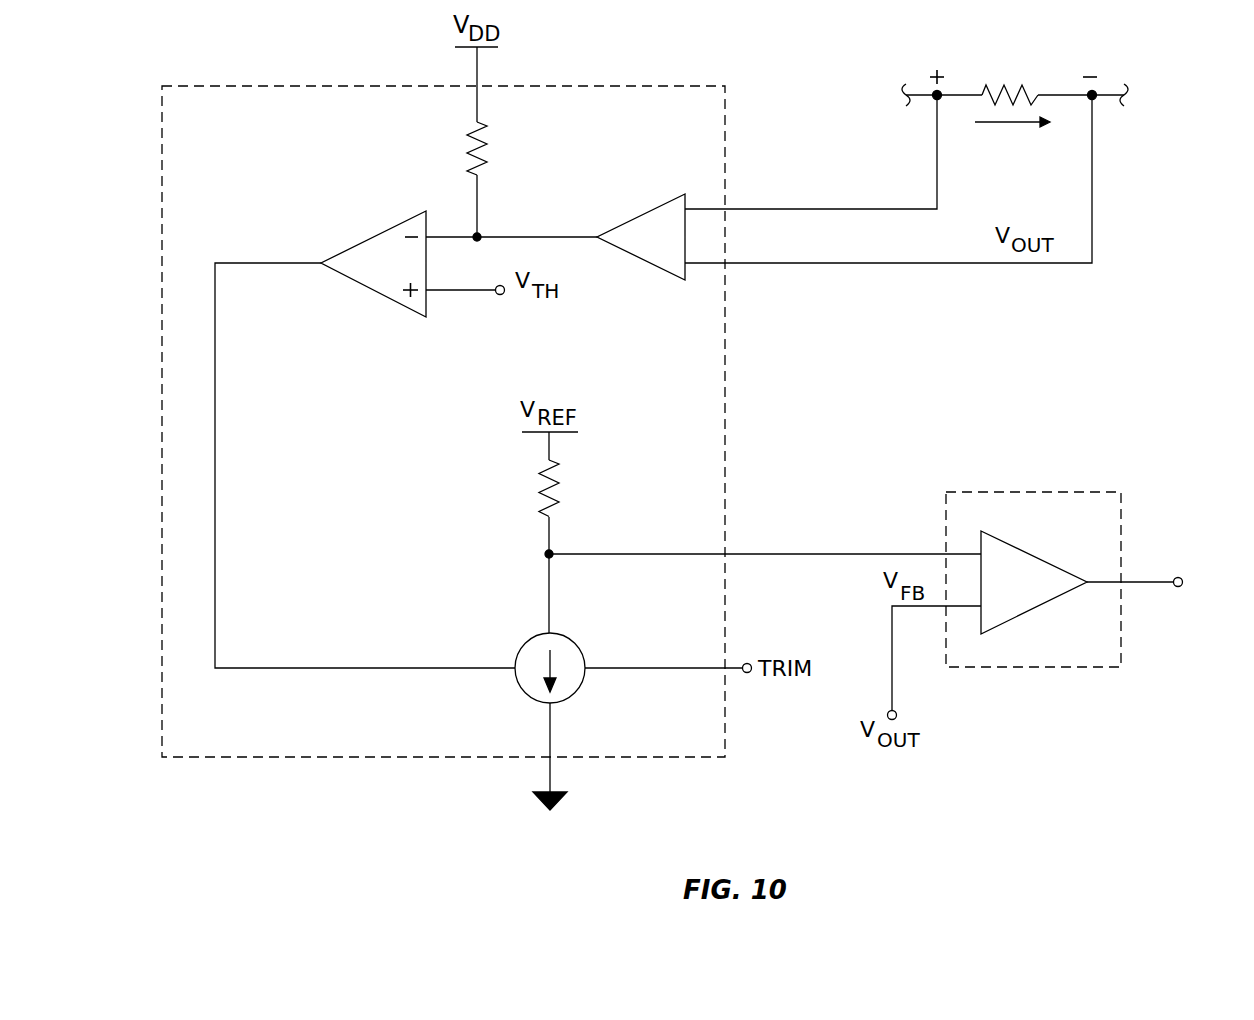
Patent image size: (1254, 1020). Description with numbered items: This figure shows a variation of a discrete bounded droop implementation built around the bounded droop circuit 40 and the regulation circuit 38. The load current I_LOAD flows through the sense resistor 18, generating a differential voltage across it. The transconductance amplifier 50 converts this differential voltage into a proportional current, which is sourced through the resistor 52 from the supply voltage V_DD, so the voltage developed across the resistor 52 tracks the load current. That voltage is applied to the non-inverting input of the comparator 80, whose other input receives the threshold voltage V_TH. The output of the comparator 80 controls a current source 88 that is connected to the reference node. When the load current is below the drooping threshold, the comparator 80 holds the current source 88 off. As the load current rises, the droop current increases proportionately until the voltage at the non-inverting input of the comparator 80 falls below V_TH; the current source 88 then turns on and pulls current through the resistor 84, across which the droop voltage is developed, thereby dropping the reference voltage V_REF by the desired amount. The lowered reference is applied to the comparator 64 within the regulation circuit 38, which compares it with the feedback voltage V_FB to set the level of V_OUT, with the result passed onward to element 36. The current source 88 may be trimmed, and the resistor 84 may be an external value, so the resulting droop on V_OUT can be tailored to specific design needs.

The sense resistor 18 is at (1020, 83).
The bounded droop circuit 40 is at (728, 122).
The transconductance amplifier 50 is at (658, 207).
The resistor 52 is at (490, 158).
The comparator 80 is at (397, 302).
The resistor 84 is at (565, 479).
The current source 88 is at (583, 650).
The comparator 64 is at (1010, 546).
The regulation circuit 38 is at (1121, 528).
The output to driver 36 is at (1252, 596).